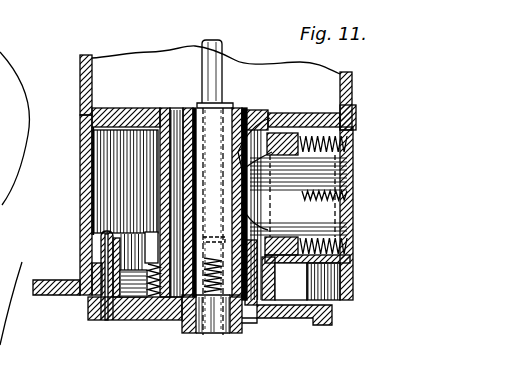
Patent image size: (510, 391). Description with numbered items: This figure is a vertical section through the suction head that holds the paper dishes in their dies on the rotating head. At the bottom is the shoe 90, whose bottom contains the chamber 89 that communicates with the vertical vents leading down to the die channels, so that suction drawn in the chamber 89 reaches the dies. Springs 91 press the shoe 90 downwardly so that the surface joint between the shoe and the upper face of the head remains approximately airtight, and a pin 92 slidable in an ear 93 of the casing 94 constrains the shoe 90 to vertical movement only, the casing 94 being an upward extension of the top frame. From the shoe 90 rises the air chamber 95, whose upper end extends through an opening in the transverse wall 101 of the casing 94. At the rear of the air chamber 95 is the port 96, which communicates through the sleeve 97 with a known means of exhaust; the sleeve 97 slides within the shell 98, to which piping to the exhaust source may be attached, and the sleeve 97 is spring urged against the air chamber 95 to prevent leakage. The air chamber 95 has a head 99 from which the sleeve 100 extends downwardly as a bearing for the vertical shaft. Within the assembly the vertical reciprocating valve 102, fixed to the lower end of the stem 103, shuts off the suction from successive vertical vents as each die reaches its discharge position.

The chamber 89 is at (293, 322).
The shoe 90 is at (137, 322).
The springs 91 is at (280, 262).
The pin 92 is at (100, 246).
The ear 93 is at (82, 210).
The casing 94 is at (82, 173).
The air chamber 95 is at (158, 153).
The port 96 is at (265, 228).
The sleeve 97 is at (352, 222).
The shell 98 is at (352, 261).
The head 99 is at (248, 112).
The sleeve 100 is at (180, 138).
The transverse wall 101 is at (143, 110).
The vertical reciprocating valve 102 is at (212, 335).
The stem 103 is at (240, 209).